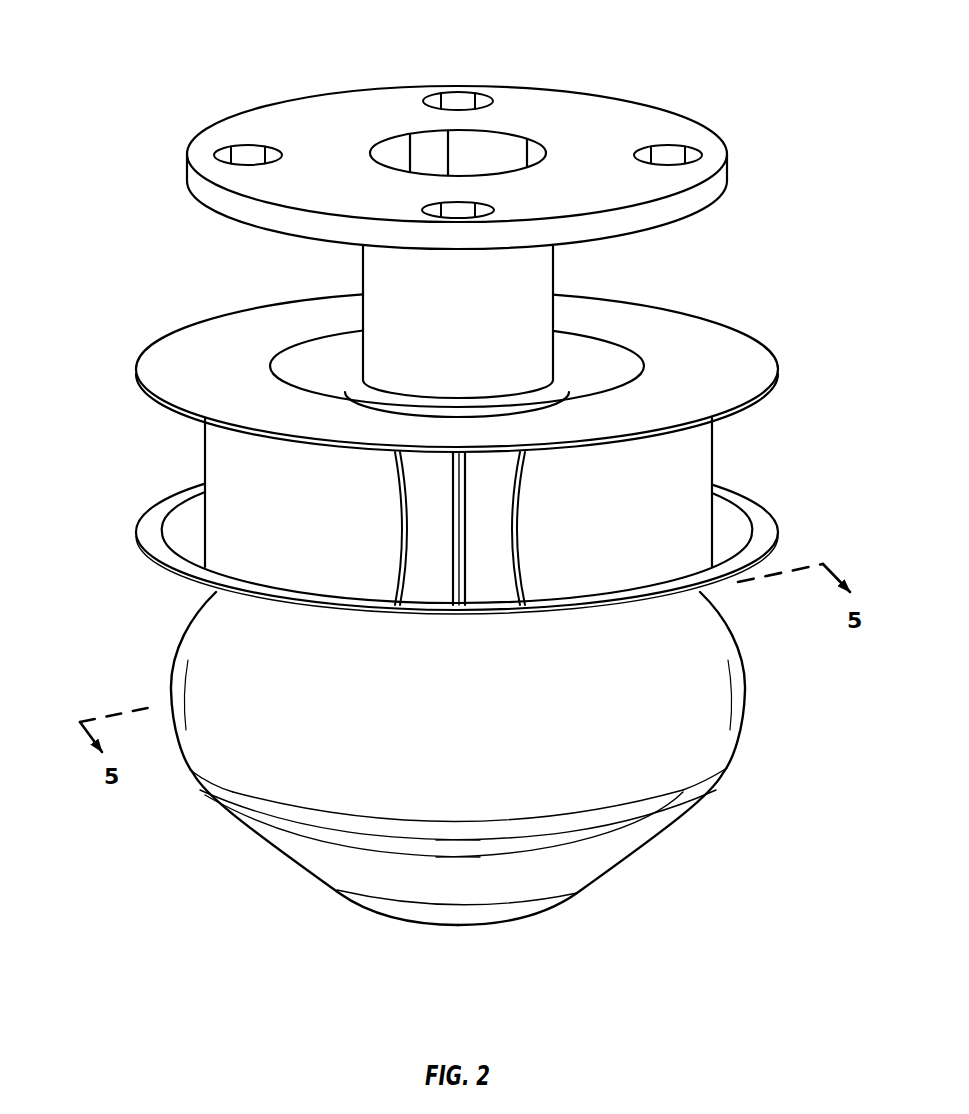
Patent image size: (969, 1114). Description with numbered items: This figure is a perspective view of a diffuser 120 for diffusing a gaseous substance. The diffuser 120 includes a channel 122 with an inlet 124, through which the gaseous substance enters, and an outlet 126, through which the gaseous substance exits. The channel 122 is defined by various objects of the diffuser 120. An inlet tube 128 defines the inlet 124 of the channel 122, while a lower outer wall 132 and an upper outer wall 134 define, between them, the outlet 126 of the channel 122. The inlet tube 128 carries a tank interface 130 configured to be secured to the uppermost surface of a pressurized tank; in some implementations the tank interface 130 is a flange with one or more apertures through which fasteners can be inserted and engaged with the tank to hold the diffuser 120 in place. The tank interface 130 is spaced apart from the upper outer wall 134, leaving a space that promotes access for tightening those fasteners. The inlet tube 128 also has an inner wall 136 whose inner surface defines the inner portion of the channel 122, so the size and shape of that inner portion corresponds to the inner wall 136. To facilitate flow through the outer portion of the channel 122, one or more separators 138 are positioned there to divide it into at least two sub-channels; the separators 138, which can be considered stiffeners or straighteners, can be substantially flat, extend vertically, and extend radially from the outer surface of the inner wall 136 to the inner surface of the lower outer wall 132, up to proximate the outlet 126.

The diffuser 120 is at (247, 827).
The channel 122 is at (512, 153).
The inlet 124 is at (420, 143).
The outlet 126 is at (138, 423).
The inlet tube 128 is at (527, 285).
The tank interface 130 is at (284, 118).
The lower outer wall 132 is at (600, 775).
The upper outer wall 134 is at (708, 343).
The inner wall 136 is at (430, 527).
The separators 138 is at (245, 475).